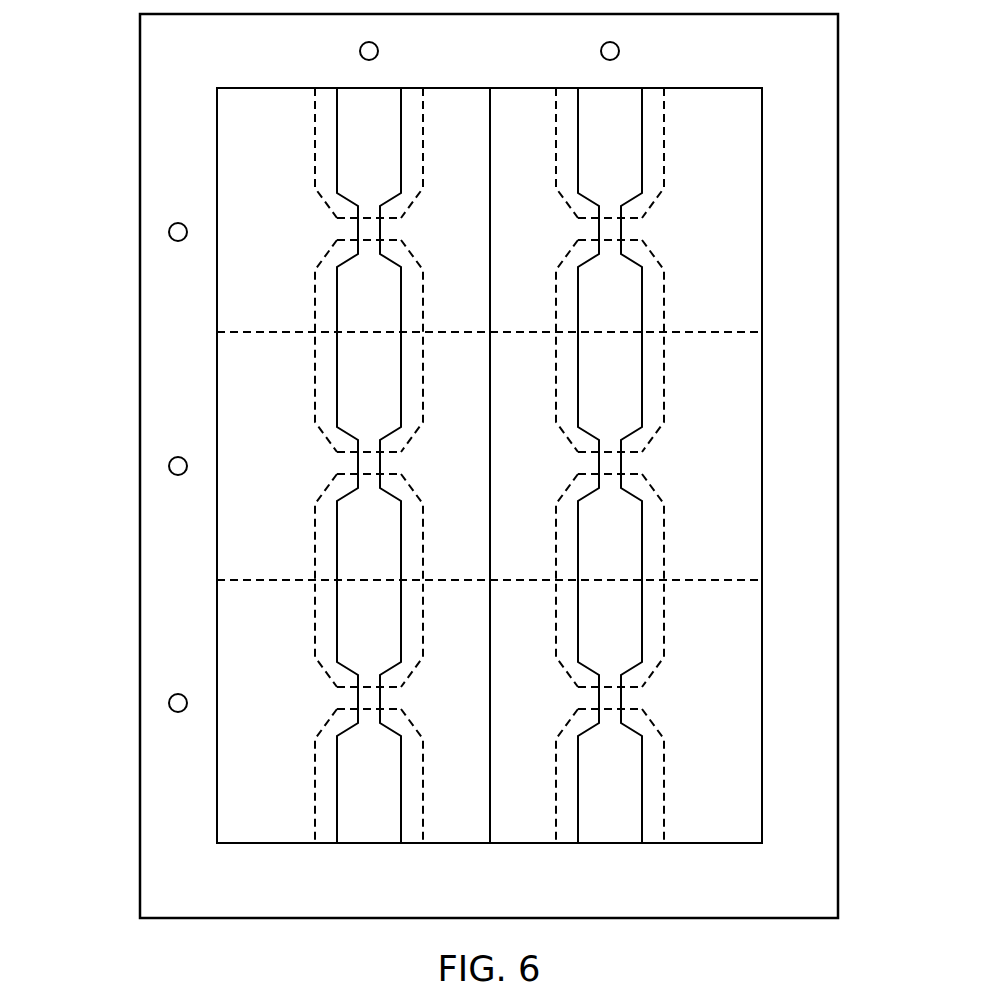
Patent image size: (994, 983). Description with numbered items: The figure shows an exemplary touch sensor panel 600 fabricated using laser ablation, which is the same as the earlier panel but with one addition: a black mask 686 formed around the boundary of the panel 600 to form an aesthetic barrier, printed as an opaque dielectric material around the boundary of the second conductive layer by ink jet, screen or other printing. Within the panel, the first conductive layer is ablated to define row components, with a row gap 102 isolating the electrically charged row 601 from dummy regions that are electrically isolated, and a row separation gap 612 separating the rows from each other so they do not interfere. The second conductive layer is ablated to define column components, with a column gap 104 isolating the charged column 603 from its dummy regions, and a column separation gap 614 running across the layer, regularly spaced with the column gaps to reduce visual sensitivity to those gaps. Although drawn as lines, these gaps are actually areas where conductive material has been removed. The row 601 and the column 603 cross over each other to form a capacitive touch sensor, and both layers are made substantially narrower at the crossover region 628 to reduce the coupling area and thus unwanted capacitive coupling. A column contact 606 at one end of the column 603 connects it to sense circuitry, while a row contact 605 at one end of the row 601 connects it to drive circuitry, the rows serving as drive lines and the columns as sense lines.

The touch sensor panel 600 is at (100, 108).
The column contact 606 is at (359, 50).
The row contact 605 is at (169, 230).
The row separation gap 612 is at (286, 330).
The column gap 104 is at (664, 268).
The row gap 102 is at (556, 318).
The crossover region 628 is at (662, 461).
The black mask 686 is at (816, 633).
The row 601 is at (245, 648).
The column separation gap 614 is at (490, 805).
The column 603 is at (612, 812).